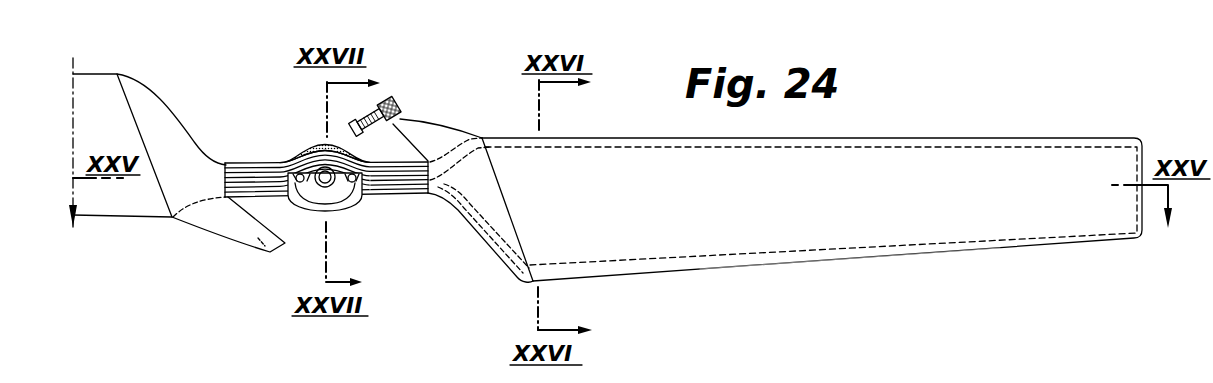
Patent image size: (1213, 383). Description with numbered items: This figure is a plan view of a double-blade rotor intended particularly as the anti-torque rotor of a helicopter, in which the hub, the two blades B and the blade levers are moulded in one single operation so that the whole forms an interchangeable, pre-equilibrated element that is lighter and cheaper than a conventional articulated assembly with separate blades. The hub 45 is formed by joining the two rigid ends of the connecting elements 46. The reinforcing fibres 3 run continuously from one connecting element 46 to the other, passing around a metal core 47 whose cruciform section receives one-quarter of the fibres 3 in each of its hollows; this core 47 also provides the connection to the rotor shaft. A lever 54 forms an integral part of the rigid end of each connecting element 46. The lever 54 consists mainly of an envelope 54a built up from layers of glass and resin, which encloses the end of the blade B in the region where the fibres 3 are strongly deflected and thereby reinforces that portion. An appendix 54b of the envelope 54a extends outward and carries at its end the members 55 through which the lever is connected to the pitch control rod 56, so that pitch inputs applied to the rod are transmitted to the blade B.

The reinforcing fibres 3 is at (385, 185).
The hub 45 is at (300, 134).
The connecting elements 46 is at (250, 167).
The metal core 47 is at (345, 174).
The lever 54 is at (415, 109).
The envelope 54a is at (498, 222).
The appendix 54b is at (410, 128).
The connection members 55 is at (390, 108).
The pitch control rod 56 is at (352, 121).
The blade B is at (932, 257).